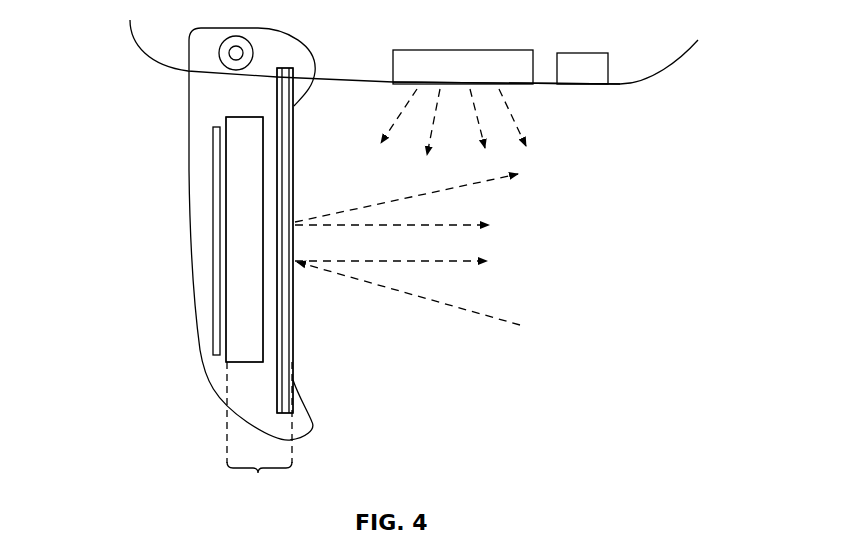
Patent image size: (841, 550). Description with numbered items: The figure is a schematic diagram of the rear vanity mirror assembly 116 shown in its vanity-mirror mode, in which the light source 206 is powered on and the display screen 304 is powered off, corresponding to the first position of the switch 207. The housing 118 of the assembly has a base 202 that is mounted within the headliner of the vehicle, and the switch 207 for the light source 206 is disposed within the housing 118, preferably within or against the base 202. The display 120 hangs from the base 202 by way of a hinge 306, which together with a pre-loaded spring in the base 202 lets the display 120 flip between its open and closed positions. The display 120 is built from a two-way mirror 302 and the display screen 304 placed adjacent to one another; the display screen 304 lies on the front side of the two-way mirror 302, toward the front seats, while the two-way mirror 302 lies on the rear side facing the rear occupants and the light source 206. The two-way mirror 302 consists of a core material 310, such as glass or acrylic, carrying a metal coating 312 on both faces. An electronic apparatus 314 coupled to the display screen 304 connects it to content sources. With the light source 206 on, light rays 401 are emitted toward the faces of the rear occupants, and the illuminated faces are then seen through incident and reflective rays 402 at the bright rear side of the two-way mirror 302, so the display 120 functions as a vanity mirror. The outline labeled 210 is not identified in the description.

The rear vanity mirror assembly 116 is at (114, 44).
The housing 118 is at (647, 80).
The base 202 is at (576, 94).
The display 120 is at (259, 431).
The light source 206 is at (477, 50).
The switch 207 is at (597, 53).
The housing 210 is at (189, 132).
The two-way mirror 302 is at (272, 109).
The display screen 304 is at (245, 238).
The hinge 306 is at (219, 54).
The core material 310 is at (285, 152).
The coating 312 is at (293, 142).
The electronic apparatus 314 is at (217, 183).
The light rays 401 is at (402, 113).
The incident and reflective rays 402 is at (473, 183).